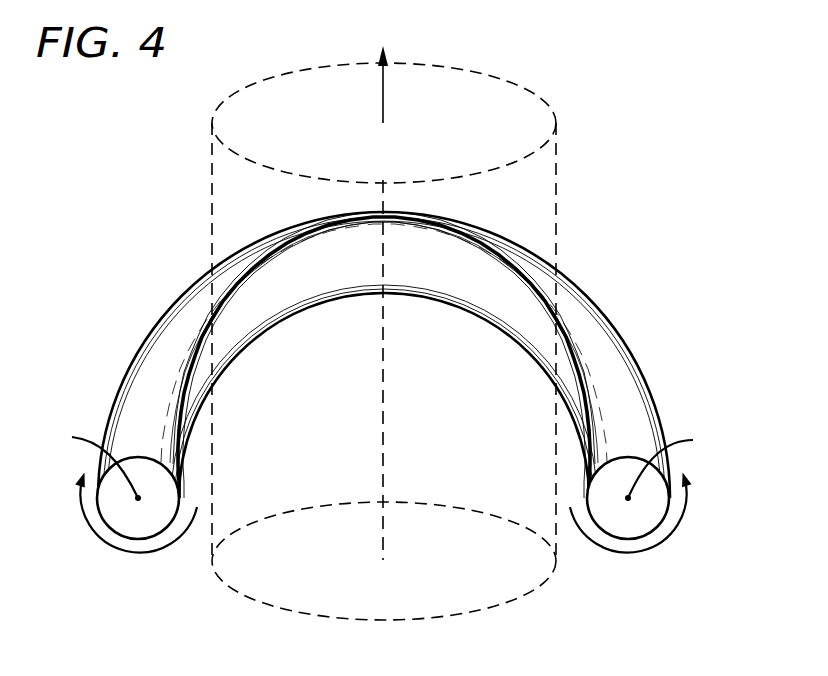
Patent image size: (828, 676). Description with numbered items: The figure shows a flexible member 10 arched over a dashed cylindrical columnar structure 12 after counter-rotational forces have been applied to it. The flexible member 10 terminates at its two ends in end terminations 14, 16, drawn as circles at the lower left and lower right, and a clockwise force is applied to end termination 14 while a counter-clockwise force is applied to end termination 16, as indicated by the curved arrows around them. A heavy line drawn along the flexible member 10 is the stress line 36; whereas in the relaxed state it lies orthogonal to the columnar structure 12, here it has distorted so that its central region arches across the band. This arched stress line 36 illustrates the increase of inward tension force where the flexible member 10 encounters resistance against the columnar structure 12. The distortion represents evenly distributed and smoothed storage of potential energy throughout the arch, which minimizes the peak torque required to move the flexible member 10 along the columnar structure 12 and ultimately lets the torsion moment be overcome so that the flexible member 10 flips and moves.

The flexible member 10 is at (155, 368).
The columnar structure 12 is at (556, 173).
The end termination 14 is at (118, 520).
The end termination 16 is at (648, 518).
The stress line 36 is at (537, 290).